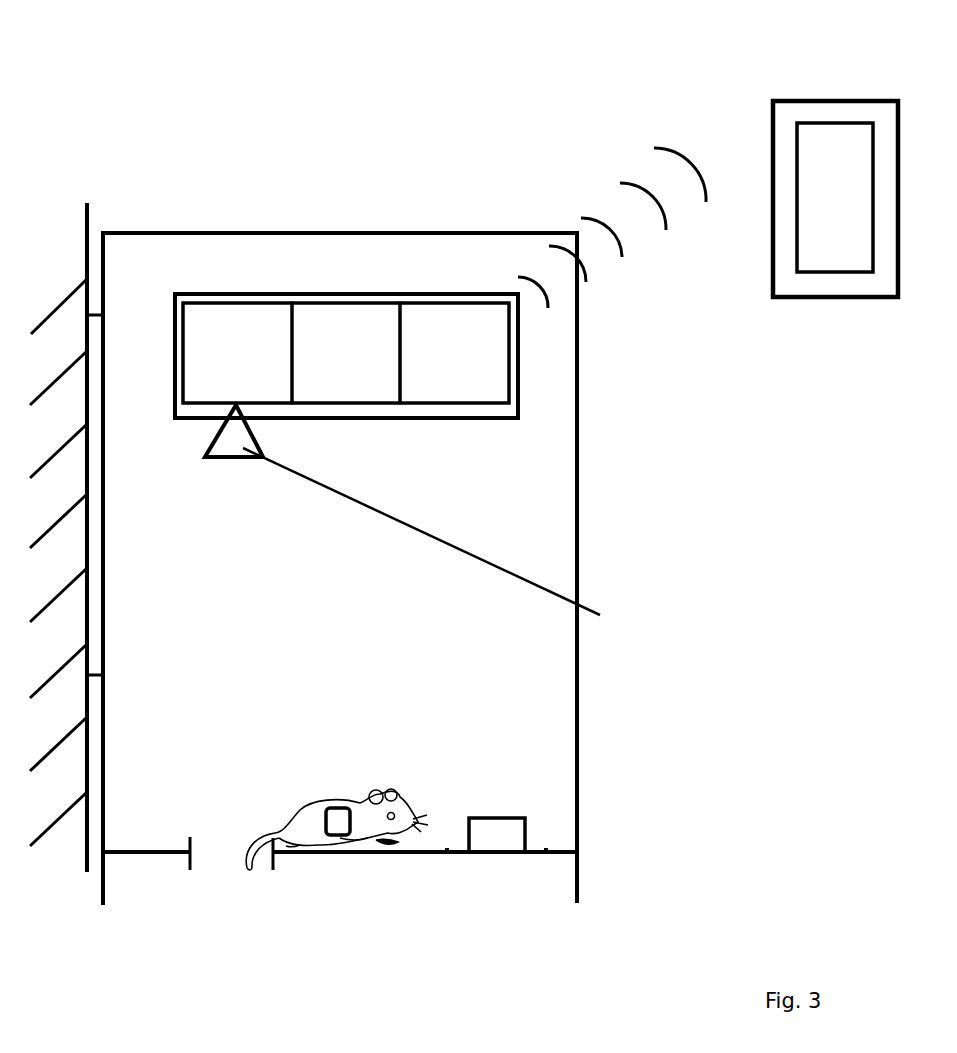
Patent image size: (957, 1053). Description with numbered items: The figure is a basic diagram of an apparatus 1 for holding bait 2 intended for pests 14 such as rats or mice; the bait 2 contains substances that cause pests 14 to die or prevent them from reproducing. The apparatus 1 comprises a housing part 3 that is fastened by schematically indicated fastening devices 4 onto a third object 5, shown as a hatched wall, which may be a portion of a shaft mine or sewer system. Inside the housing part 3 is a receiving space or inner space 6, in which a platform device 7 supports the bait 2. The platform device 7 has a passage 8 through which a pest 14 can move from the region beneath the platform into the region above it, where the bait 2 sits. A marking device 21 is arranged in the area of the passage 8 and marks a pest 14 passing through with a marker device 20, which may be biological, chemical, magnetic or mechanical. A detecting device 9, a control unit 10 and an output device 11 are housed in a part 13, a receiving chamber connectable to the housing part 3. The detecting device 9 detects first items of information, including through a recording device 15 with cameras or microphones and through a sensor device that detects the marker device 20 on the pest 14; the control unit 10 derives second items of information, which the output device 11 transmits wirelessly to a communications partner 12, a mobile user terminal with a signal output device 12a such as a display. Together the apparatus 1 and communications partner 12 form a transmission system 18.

The apparatus 1 is at (370, 521).
The bait 2 is at (500, 837).
The housing part 3 is at (578, 737).
The fastening devices 4 is at (95, 305).
The third object 5 is at (33, 503).
The inner space 6 is at (515, 552).
The platform device 7 is at (545, 853).
The passage 8 is at (230, 878).
The detecting device 9 is at (228, 333).
The control unit 10 is at (321, 325).
The output device 11 is at (431, 325).
The communications partner 12 is at (807, 157).
The signal output device 12a is at (857, 180).
The part 13 is at (411, 286).
The pest 14 is at (315, 833).
The recording device 15 is at (418, 518).
The transmission system 18 is at (775, 540).
The marker device 20 is at (342, 826).
The marking device 21 is at (190, 870).